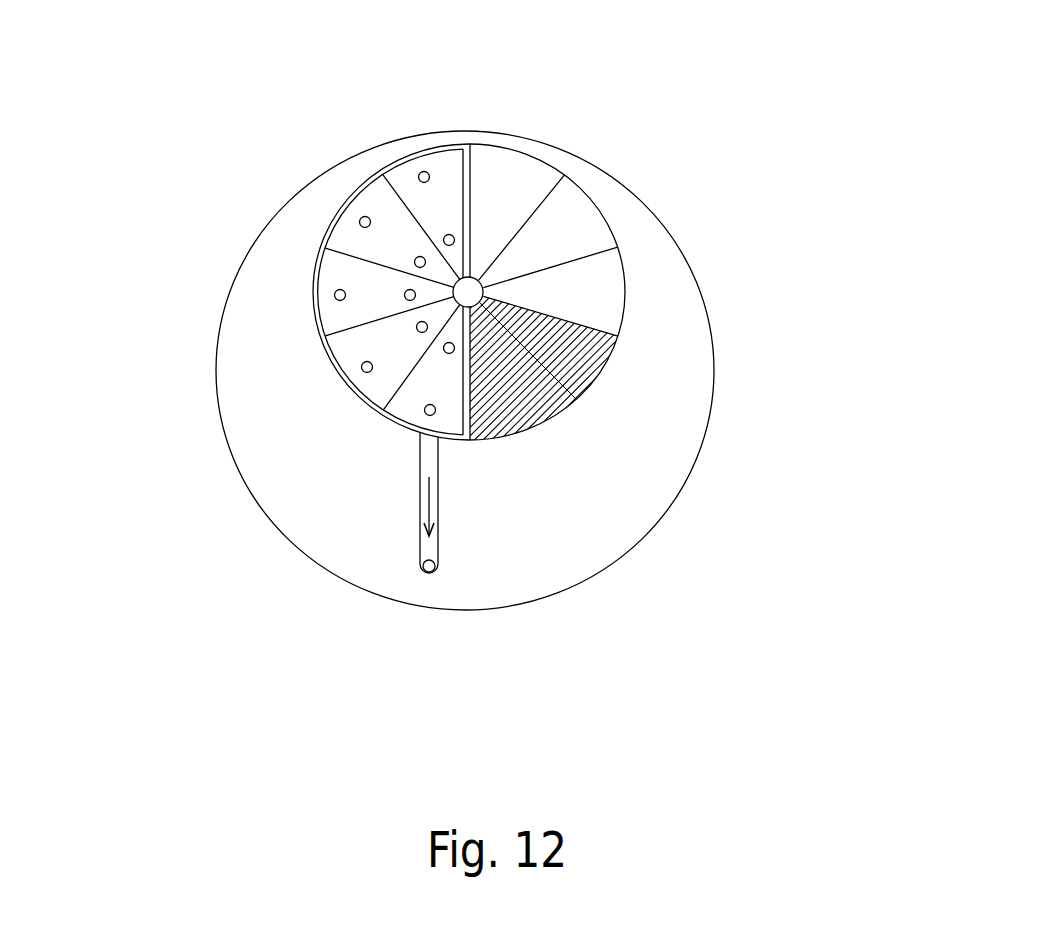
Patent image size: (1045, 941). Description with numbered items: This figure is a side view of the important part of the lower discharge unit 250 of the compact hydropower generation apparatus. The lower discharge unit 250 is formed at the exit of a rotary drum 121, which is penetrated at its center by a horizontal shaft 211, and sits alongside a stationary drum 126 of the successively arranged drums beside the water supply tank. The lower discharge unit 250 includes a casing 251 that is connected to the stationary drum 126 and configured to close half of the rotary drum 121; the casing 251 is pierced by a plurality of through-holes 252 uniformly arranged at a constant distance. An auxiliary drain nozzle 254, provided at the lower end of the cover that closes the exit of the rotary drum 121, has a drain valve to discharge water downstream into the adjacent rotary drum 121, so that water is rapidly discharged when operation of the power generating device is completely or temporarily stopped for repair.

The rotary drum 121 is at (573, 170).
The stationary drum 126 is at (665, 512).
The shaft 211 is at (472, 291).
The lower discharge unit 250 is at (692, 190).
The casing 251 is at (342, 345).
The through-holes 252 is at (362, 217).
The auxiliary drain nozzle 254 is at (436, 568).